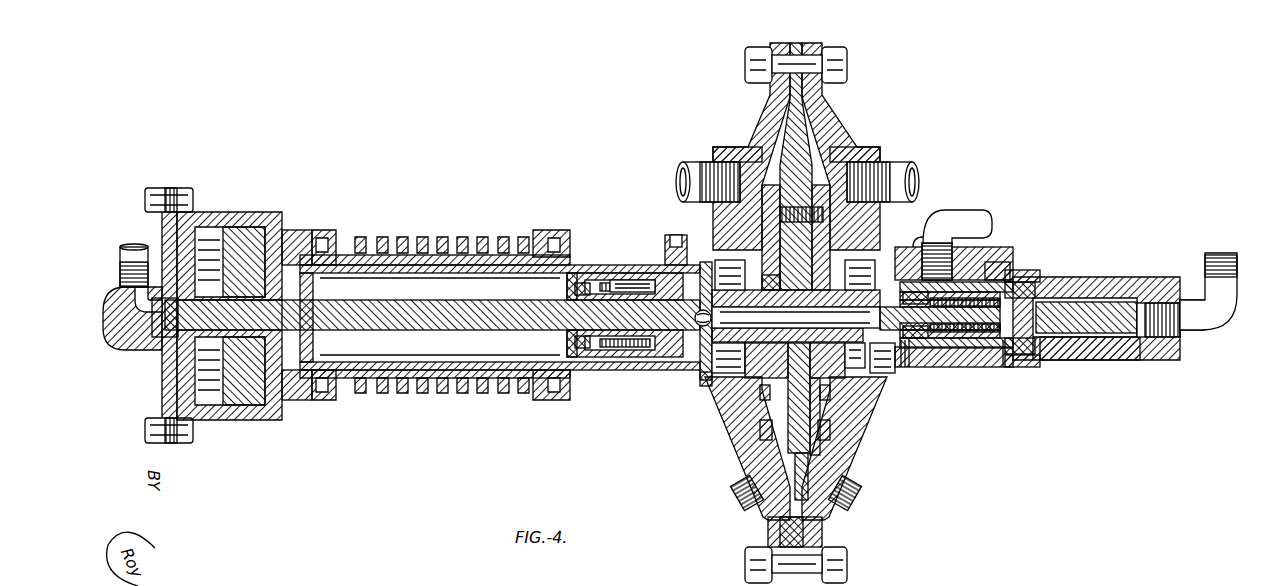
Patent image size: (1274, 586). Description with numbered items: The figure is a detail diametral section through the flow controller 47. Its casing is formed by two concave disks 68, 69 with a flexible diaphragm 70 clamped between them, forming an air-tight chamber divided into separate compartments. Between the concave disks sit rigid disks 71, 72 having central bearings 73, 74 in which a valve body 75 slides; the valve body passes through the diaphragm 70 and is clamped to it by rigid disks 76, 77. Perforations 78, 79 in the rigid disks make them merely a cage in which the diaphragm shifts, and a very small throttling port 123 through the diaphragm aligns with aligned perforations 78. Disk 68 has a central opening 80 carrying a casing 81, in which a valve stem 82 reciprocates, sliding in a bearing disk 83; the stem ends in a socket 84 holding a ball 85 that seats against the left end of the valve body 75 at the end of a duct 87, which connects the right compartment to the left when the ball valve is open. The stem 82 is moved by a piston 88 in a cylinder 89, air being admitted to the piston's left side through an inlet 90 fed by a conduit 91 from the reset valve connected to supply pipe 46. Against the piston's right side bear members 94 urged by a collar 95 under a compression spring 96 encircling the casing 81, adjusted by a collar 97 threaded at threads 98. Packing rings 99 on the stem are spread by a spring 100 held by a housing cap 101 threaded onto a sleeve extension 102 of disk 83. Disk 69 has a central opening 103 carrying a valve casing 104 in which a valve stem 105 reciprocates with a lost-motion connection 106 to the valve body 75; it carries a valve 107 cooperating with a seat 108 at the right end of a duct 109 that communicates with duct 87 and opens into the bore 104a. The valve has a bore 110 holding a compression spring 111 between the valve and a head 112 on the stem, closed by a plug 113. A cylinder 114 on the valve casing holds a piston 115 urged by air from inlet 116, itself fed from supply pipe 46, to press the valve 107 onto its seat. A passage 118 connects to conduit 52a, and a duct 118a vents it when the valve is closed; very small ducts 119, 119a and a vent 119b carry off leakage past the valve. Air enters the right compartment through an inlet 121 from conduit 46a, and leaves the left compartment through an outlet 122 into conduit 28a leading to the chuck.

The conduit 28a is at (676, 170).
The supply pipe 46 is at (1226, 252).
The conduit 46a is at (906, 172).
The flow controller 47 is at (513, 166).
The conduit 52a is at (987, 218).
The concave disk 68 is at (768, 122).
The concave disk 69 is at (828, 122).
The flexible diaphragm 70 is at (813, 138).
The rigid disk 71 is at (767, 254).
The rigid disk 72 is at (831, 250).
The central bearing 73 is at (768, 286).
The central bearing 74 is at (865, 343).
The valve body 75 is at (788, 350).
The rigid disk 76 is at (790, 412).
The rigid disk 77 is at (822, 409).
The perforation 78 is at (760, 392).
The perforation 79 is at (730, 262).
The central opening 80 is at (693, 229).
The casing 81 is at (583, 266).
The valve stem 82 is at (455, 327).
The bearing disk 83 is at (698, 328).
The socket 84 is at (704, 372).
The ball 85 is at (708, 386).
The duct 87 is at (796, 316).
The piston 88 is at (267, 227).
The cylinder 89 is at (211, 212).
The inlet 90 is at (117, 287).
The conduit 91 is at (131, 248).
The members 94 is at (300, 232).
The collar 95 is at (338, 238).
The compression spring 96 is at (383, 239).
The collar 97 is at (570, 236).
The threads 98 is at (373, 394).
The packing rings 99 is at (568, 340).
The spring 100 is at (620, 357).
The housing cap 101 is at (578, 371).
The sleeve extension 102 is at (648, 290).
The central opening 103 is at (916, 240).
The valve casing 104 is at (963, 259).
The bore 104a is at (880, 317).
The valve stem 105 is at (935, 344).
The lost-motion connection 106 is at (907, 368).
The valve 107 is at (930, 350).
The seat 108 is at (915, 348).
The duct 109 is at (918, 380).
The bore 110 is at (993, 270).
The compression spring 111 is at (1007, 278).
The head 112 is at (1028, 290).
The plug 113 is at (1032, 366).
The cylinder 114 is at (1098, 286).
The piston 115 is at (1094, 347).
The inlet 116 is at (1178, 290).
The passage 118 is at (938, 243).
The duct 118a is at (990, 270).
The duct 119 is at (912, 366).
The duct 119a is at (1003, 367).
The vent 119b is at (1037, 368).
The inlet 121 is at (877, 149).
The outlet 122 is at (700, 180).
The throttling port 123 is at (823, 212).